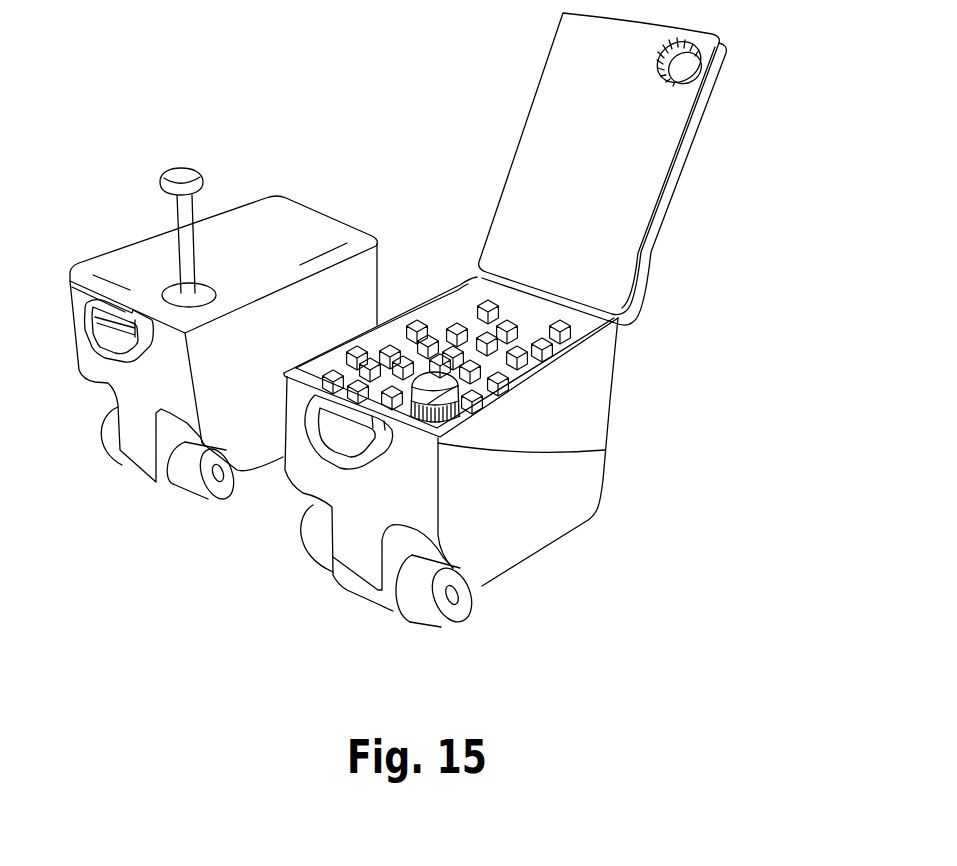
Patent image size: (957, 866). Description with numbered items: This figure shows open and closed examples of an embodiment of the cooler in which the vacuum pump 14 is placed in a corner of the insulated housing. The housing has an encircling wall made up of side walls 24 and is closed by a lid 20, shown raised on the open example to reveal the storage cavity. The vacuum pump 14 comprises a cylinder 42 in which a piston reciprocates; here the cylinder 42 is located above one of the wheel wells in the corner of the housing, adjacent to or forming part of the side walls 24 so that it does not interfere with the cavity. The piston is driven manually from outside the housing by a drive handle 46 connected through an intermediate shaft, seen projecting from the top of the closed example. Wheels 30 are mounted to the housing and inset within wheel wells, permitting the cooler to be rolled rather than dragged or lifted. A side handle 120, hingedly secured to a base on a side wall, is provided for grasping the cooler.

The vacuum pump 14 is at (500, 357).
The cylinder 42 is at (515, 390).
The lid 20 is at (607, 241).
The side wall 24 is at (500, 452).
The wheels 30 is at (467, 583).
The drive handle 46 is at (197, 178).
The side handle 120 is at (605, 450).